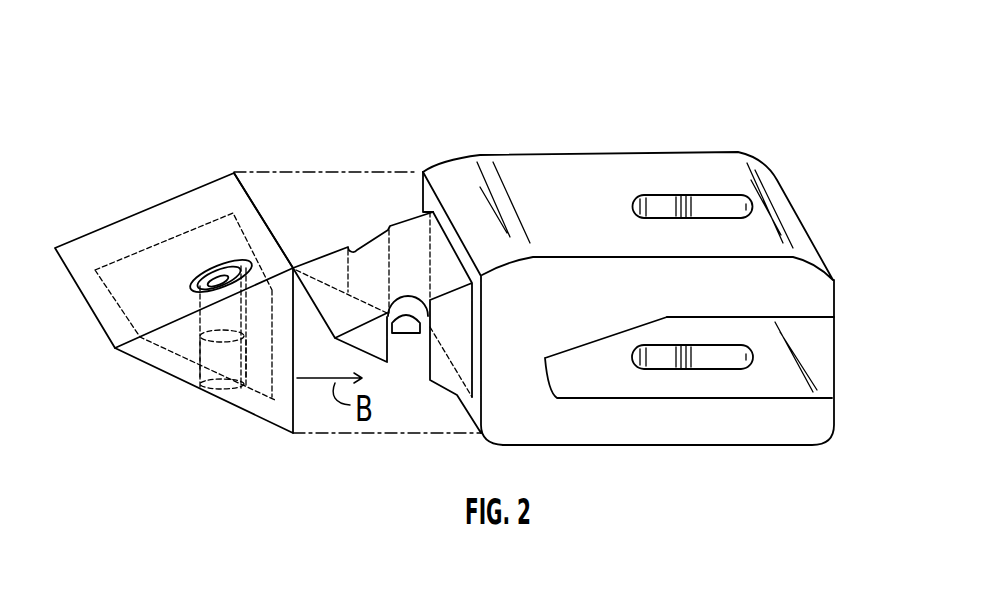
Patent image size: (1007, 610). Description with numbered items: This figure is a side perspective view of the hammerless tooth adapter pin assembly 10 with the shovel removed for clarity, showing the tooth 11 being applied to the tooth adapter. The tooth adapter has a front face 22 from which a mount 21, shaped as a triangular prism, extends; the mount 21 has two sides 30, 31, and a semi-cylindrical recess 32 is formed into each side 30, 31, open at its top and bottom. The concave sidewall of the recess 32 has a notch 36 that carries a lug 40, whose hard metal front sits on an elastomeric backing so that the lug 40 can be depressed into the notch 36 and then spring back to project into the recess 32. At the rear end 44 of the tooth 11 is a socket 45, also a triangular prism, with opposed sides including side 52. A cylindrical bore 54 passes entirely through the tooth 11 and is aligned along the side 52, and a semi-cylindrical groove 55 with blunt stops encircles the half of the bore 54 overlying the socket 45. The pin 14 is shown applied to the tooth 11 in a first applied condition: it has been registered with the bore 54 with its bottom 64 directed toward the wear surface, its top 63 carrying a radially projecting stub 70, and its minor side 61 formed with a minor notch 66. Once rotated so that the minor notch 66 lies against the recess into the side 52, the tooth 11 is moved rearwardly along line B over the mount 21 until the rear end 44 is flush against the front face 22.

The hammerless tooth adapter pin assembly 10 is at (760, 101).
The tooth 11 is at (116, 236).
The pin 14 is at (220, 392).
The mount 21 is at (413, 223).
The front face 22 is at (428, 198).
The side 30 is at (467, 333).
The side 31 is at (398, 224).
The recess 32 is at (422, 358).
The notch 36 is at (413, 298).
The lug 40 is at (432, 328).
The rear end 44 is at (246, 193).
The socket 45 is at (283, 255).
The side 52 is at (165, 316).
The bore 54 is at (222, 258).
The groove 55 is at (213, 270).
The minor side 61 is at (212, 358).
The top 63 is at (226, 264).
The bottom 64 is at (231, 343).
The minor notch 66 is at (250, 386).
The stub 70 is at (202, 284).